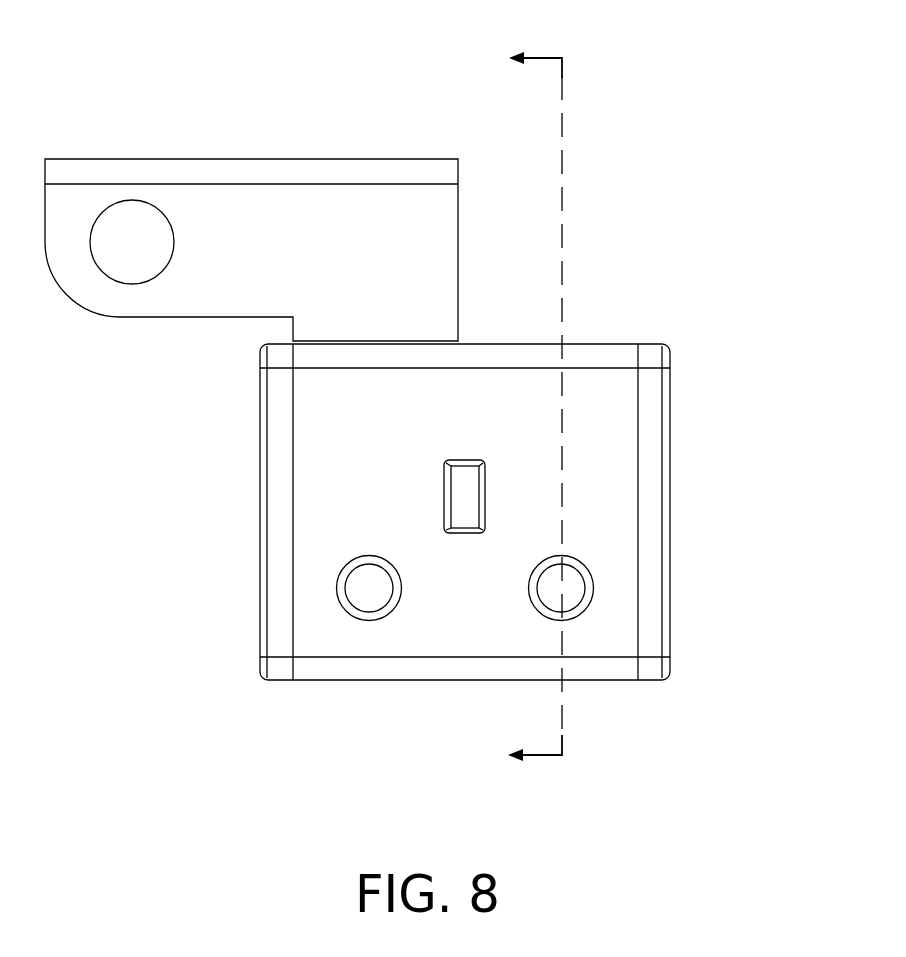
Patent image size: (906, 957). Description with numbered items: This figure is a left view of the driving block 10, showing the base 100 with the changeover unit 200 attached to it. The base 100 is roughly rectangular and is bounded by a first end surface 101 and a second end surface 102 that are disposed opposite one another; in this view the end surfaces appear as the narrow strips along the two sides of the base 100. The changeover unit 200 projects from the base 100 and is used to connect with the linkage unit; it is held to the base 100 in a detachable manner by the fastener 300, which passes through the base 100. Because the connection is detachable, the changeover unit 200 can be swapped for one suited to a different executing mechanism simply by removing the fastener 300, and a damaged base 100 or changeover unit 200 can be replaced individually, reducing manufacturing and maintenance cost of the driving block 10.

The driving block 10 is at (630, 134).
The base 100 is at (280, 507).
The first end surface 101 is at (671, 473).
The second end surface 102 is at (260, 428).
The changeover unit 200 is at (238, 158).
The fastener 300 is at (368, 577).